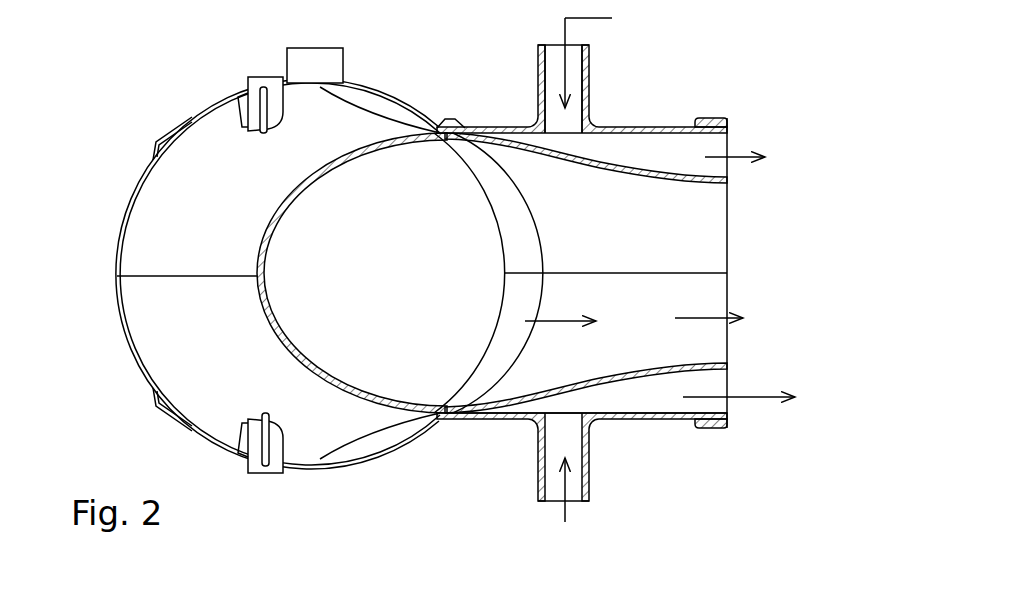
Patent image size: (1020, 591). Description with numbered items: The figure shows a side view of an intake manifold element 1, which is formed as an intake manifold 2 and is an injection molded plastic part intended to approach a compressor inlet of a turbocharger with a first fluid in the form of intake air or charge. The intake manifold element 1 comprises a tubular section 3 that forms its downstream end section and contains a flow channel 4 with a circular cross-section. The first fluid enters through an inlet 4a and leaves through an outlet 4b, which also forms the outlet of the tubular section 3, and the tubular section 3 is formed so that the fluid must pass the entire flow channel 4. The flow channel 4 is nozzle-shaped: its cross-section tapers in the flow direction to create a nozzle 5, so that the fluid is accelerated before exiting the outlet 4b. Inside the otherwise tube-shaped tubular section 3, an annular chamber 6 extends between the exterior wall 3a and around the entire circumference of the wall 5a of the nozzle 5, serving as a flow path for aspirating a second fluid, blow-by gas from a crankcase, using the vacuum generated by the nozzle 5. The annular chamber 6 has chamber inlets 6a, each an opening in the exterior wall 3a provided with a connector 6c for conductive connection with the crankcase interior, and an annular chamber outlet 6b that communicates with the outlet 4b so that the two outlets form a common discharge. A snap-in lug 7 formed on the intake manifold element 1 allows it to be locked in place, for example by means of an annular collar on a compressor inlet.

The intake manifold element 1 is at (128, 126).
The intake manifold 2 is at (250, 204).
The tubular section 3 is at (671, 228).
The exterior wall 3a is at (668, 126).
The flow channel 4 is at (576, 223).
The inlet 4a is at (510, 295).
The outlet 4b is at (731, 215).
The nozzle 5 is at (590, 307).
The wall of the nozzle 5a is at (601, 164).
The annular chamber 6 is at (614, 404).
The chamber inlet 6a is at (599, 282).
The annular chamber outlet 6b is at (731, 136).
The connector 6c is at (538, 93).
The snap-in lug 7 is at (708, 120).